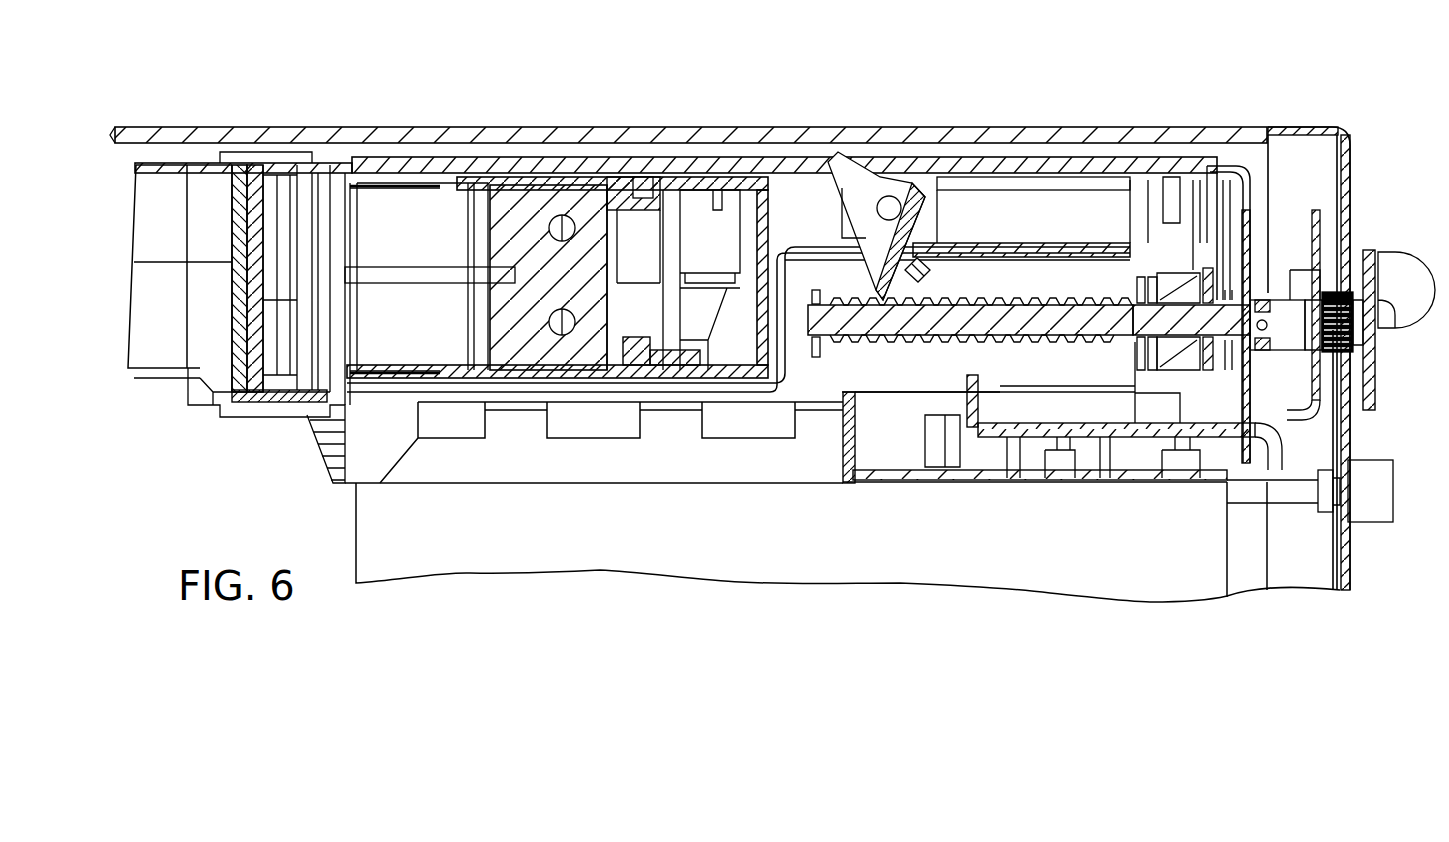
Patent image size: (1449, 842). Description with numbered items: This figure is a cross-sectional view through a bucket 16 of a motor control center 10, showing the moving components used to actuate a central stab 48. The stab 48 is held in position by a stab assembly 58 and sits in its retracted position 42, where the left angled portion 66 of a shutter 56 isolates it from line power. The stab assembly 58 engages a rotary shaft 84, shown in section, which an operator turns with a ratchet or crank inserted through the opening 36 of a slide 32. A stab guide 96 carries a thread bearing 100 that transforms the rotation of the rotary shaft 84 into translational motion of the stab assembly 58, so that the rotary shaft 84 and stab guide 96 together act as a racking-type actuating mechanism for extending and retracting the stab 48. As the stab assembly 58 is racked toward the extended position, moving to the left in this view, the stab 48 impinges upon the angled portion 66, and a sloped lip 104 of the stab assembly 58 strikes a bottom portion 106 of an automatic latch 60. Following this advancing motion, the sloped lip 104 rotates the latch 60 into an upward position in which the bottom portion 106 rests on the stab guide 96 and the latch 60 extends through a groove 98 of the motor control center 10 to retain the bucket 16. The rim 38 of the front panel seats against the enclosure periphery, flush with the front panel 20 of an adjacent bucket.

The motor control center structure 10 is at (487, 133).
The bucket 16 is at (1077, 545).
The front panel 20 is at (1373, 500).
The slide 32 is at (1372, 250).
The opening 36 is at (1384, 318).
The rim 38 is at (1317, 125).
The retracted position 42 is at (402, 158).
The stab 48 is at (403, 250).
The shutter 56 is at (222, 254).
The stab assembly 58 is at (793, 233).
The automatic latch 60 is at (875, 187).
The left angled portion 66 is at (282, 332).
The rotary shaft 84 is at (927, 313).
The stab guide 96 is at (1208, 252).
The groove 98 is at (843, 137).
The thread bearing 100 is at (1170, 280).
The sloped lip 104 is at (922, 258).
The bottom portion 106 is at (913, 238).